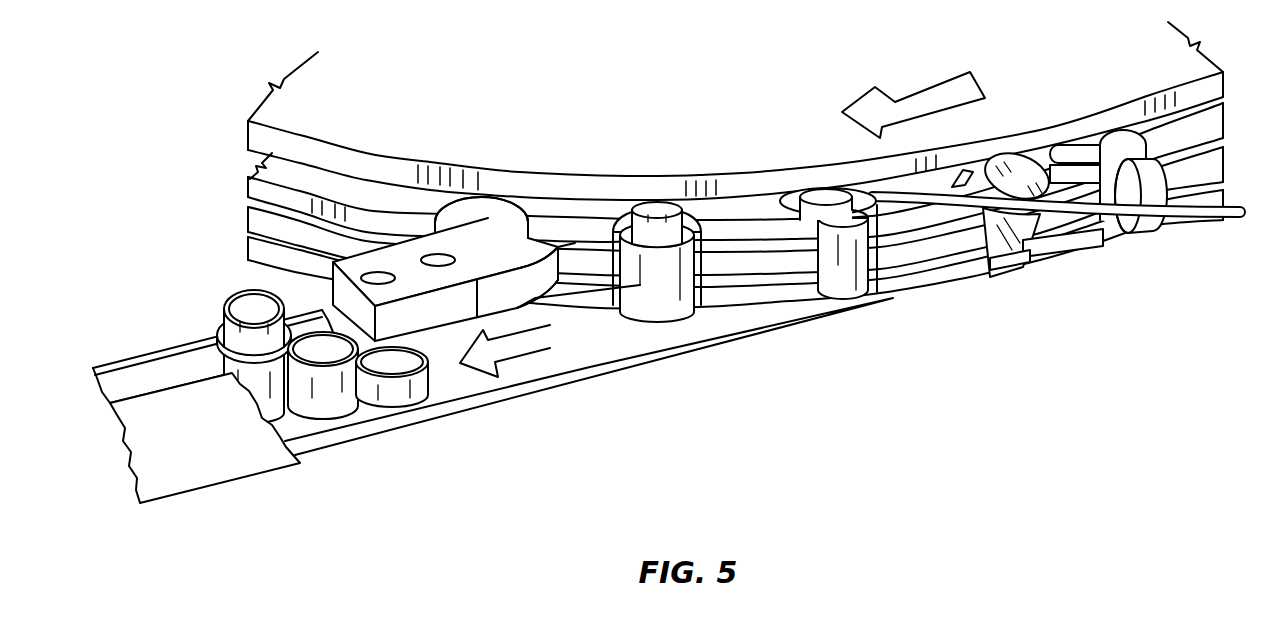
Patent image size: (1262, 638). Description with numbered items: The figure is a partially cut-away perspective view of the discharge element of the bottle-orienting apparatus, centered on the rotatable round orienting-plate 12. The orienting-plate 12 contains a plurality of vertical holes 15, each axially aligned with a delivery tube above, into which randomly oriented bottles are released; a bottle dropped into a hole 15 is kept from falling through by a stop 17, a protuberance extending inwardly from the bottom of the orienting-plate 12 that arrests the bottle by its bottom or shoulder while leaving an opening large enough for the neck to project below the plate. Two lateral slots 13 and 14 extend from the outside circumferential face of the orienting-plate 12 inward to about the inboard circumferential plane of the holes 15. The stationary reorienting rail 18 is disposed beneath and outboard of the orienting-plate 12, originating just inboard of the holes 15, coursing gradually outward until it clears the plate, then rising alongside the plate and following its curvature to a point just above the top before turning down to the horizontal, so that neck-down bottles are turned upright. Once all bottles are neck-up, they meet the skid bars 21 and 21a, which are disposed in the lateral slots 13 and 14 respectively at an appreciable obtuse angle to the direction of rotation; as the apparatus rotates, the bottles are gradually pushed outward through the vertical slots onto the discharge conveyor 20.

The orienting-plate 12 is at (698, 173).
The lateral slot 13 is at (927, 230).
The lateral slot 14 is at (967, 253).
The vertical hole 15 is at (455, 210).
The stop 17 is at (1100, 248).
The reorienting rail 18 is at (1043, 212).
The discharge conveyor 20 is at (537, 368).
The skid bar 21 is at (483, 243).
The skid bar 21a is at (517, 295).